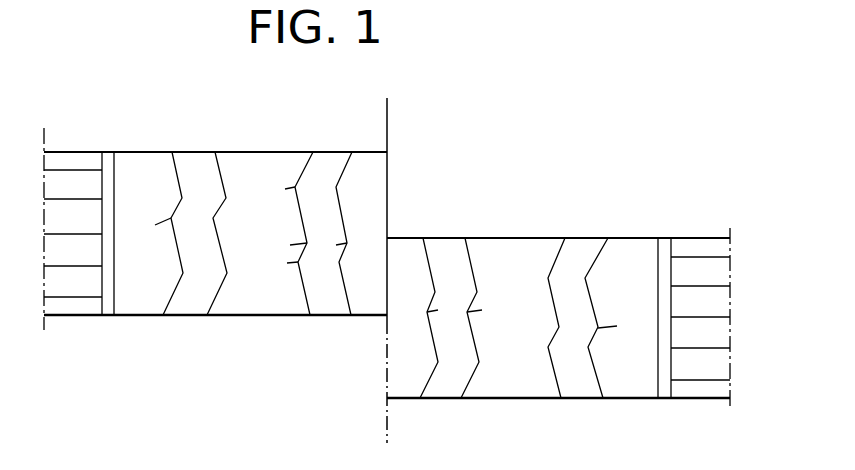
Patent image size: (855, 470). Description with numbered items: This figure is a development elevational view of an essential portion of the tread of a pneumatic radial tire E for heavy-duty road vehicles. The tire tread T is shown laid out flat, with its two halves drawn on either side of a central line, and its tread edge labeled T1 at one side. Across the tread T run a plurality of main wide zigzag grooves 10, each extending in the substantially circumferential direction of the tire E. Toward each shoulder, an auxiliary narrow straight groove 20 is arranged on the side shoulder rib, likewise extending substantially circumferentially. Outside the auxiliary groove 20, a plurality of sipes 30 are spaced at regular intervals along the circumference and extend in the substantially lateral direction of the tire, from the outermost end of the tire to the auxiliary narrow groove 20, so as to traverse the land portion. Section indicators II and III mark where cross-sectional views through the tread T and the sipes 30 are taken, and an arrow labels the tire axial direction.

The main wide zigzag groove 10 is at (187, 162).
The auxiliary narrow straight groove 20 is at (108, 163).
The sipe 30 is at (53, 198).
The tire tread T is at (246, 181).
The tread edge T1 is at (26, 235).
The pneumatic radial tire E is at (391, 180).
The section line II is at (3, 184).
The section line III is at (675, 357).